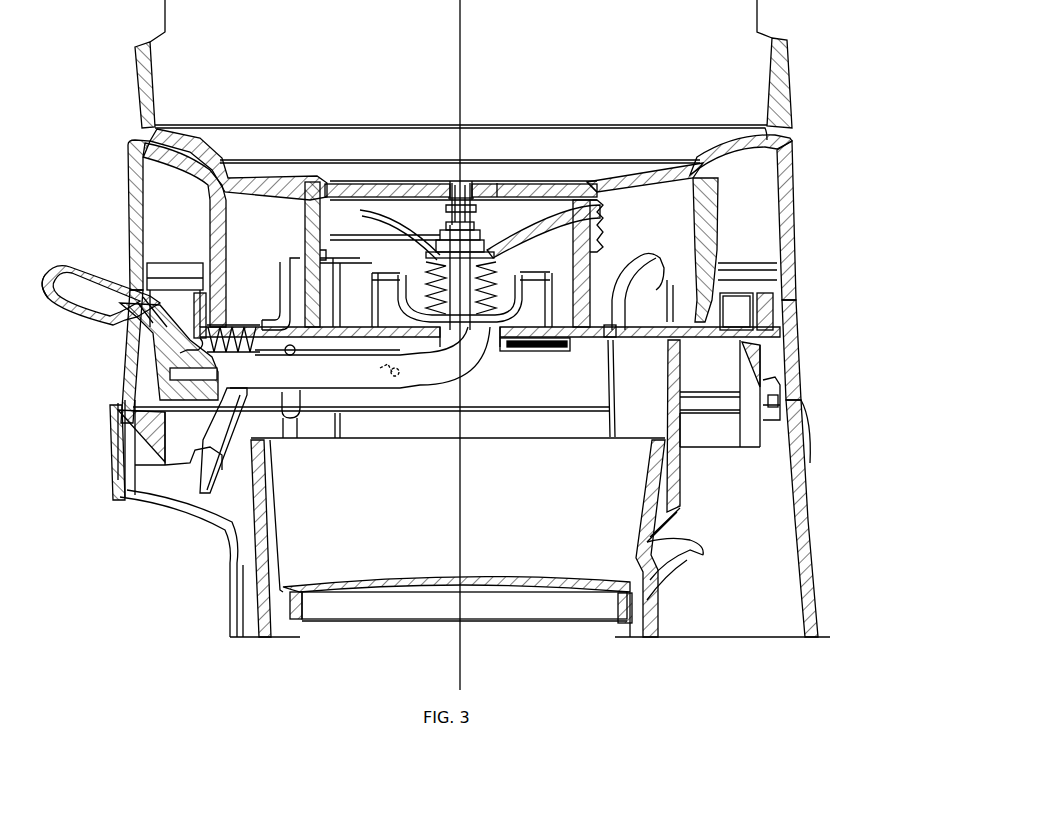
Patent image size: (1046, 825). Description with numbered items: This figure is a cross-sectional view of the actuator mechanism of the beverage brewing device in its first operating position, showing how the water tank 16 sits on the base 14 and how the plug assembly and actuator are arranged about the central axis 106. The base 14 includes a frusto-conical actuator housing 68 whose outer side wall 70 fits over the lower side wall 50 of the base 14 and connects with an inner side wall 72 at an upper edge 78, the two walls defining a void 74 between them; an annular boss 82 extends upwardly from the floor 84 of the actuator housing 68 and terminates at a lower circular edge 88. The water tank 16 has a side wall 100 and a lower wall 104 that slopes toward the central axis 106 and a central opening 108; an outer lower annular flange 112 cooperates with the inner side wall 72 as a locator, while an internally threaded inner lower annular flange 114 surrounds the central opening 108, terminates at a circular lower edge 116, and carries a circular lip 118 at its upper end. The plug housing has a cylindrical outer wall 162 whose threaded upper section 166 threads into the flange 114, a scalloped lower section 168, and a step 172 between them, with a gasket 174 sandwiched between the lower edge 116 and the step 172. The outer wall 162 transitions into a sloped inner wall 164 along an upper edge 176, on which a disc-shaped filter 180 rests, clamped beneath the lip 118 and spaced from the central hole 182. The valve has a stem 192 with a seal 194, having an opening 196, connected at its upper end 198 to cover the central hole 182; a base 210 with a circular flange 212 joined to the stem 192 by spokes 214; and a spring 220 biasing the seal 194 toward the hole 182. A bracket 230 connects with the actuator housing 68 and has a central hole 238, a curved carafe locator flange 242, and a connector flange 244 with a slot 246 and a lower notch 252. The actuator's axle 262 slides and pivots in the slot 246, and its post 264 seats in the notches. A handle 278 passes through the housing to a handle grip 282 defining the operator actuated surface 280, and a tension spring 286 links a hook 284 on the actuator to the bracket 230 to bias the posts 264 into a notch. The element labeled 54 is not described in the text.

The base 14 is at (826, 615).
The water tank 16 is at (797, 68).
The lower side wall 50 is at (807, 553).
The latch 54 is at (778, 378).
The actuator housing 68 is at (807, 295).
The outer side wall 70 is at (792, 326).
The inner side wall 72 is at (712, 252).
The void 74 is at (759, 244).
The upper edge 78 is at (767, 143).
The annular boss 82 is at (625, 268).
The floor 84 is at (667, 322).
The lower circular edge 88 is at (612, 342).
The side wall 100 is at (767, 83).
The lower wall 104 is at (638, 180).
The central axis 106 is at (462, 66).
The central opening 108 is at (342, 183).
The outer lower annular flange 112 is at (693, 226).
The inner lower annular flange 114 is at (327, 198).
The circular lower edge 116 is at (322, 258).
The circular lip 118 is at (326, 183).
The cylindrical outer wall 162 is at (333, 273).
The sloped inner wall 164 is at (370, 224).
The threaded upper section 166 is at (600, 222).
The lower section 168 is at (316, 298).
The step 172 is at (320, 262).
The gasket 174 is at (600, 262).
The upper edge 176 is at (588, 180).
The filter 180 is at (502, 185).
The central hole 182 is at (468, 258).
The stem 192 is at (458, 182).
The seal 194 is at (445, 225).
The opening 196 is at (470, 228).
The upper end 198 is at (477, 181).
The base 210 is at (507, 343).
The circular flange 212 is at (550, 342).
The spokes 214 is at (502, 342).
The spring 220 is at (527, 192).
The bracket 230 is at (775, 350).
The central hole 238 is at (527, 343).
The carafe locator flange 242 is at (670, 494).
The connector flange 244 is at (300, 410).
The slot 246 is at (380, 378).
The lower notch 252 is at (283, 417).
The axle 262 is at (395, 378).
The post 264 is at (294, 354).
The handle 278 is at (157, 333).
The operator actuated surface 280 is at (97, 277).
The handle grip 282 is at (48, 278).
The hook 284 is at (193, 333).
The tension spring 286 is at (190, 344).